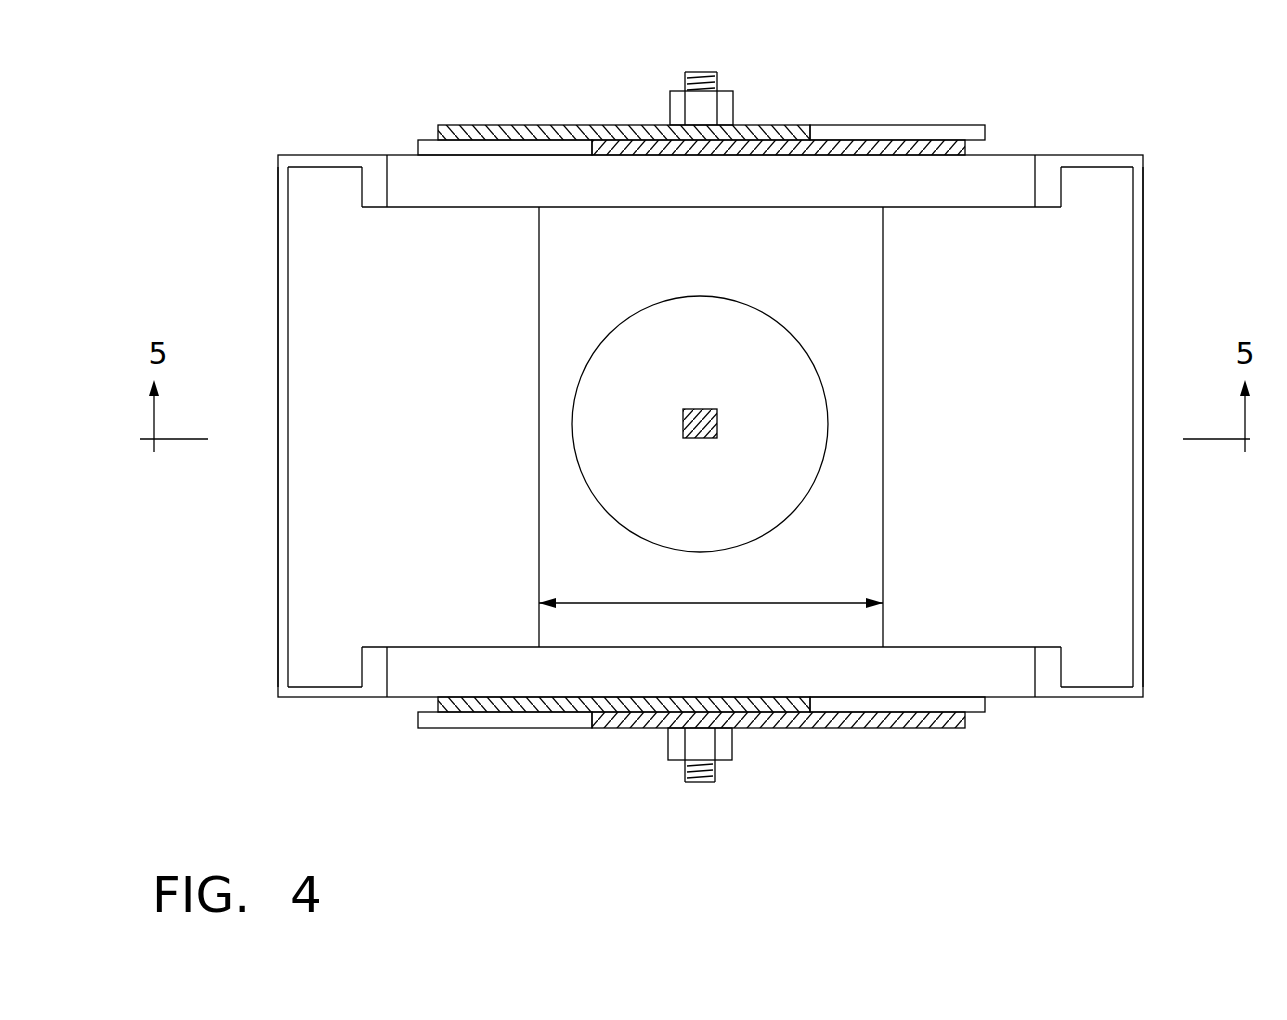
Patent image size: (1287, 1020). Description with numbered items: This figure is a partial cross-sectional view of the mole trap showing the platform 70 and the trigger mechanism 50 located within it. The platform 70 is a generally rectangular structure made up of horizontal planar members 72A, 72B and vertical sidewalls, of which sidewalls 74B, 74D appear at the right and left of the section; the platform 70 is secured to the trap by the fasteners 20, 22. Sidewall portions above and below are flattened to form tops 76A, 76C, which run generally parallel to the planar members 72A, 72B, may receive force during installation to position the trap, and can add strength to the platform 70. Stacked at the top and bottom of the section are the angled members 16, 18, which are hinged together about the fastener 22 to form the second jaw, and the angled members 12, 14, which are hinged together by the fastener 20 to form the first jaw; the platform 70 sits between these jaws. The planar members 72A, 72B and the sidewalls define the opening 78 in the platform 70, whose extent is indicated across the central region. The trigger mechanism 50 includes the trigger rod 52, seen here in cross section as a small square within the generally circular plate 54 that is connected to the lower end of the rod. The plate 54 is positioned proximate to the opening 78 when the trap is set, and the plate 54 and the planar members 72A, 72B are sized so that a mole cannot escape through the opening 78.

The first angled member 12 is at (503, 713).
The second angled member 14 is at (848, 728).
The angled member 16 is at (534, 125).
The angled member 18 is at (877, 140).
The fastener 20 is at (700, 782).
The fastener 22 is at (713, 72).
The trigger mechanism 50 is at (650, 305).
The trigger rod 52 is at (705, 409).
The plate 54 is at (676, 517).
The platform 70 is at (1107, 142).
The horizontal planar member 72A is at (980, 419).
The horizontal planar member 72B is at (388, 416).
The vertical sidewall 74B is at (1143, 296).
The vertical sidewall 74D is at (278, 278).
The top 76A is at (933, 665).
The top 76C is at (927, 193).
The opening 78 is at (630, 600).